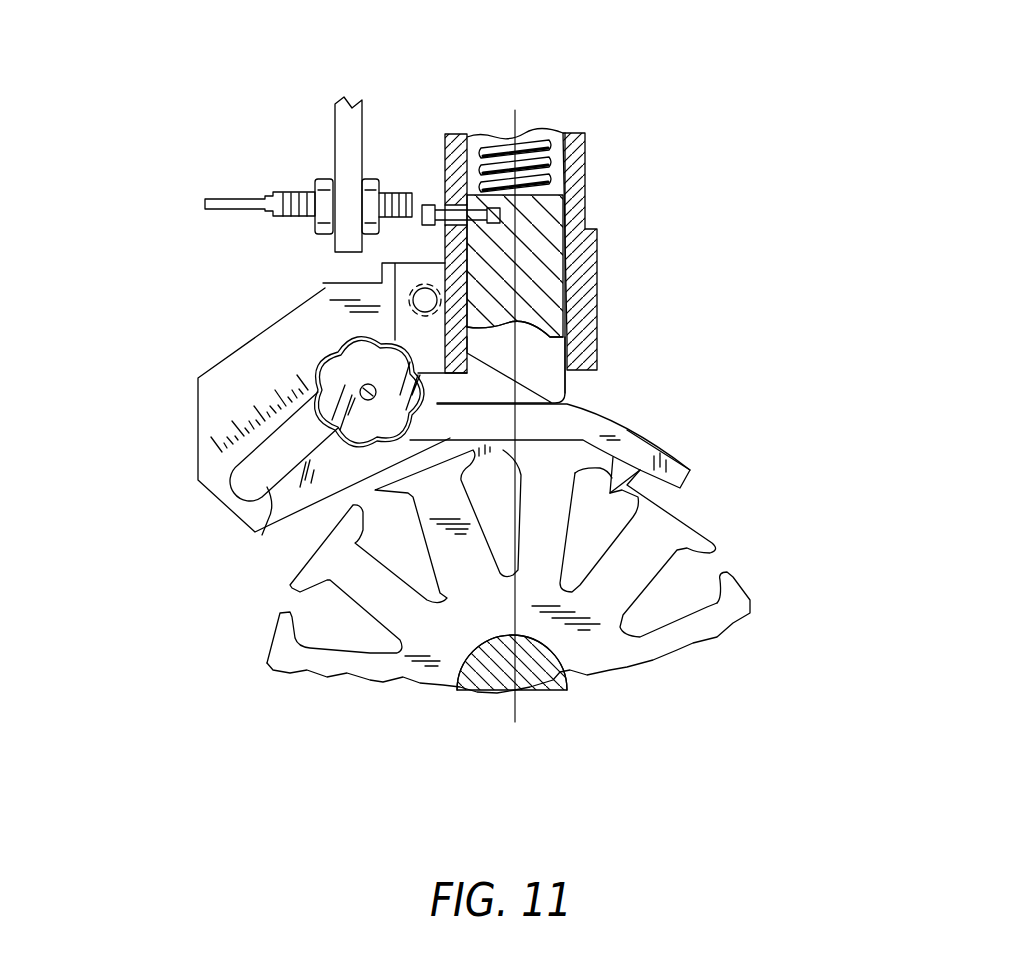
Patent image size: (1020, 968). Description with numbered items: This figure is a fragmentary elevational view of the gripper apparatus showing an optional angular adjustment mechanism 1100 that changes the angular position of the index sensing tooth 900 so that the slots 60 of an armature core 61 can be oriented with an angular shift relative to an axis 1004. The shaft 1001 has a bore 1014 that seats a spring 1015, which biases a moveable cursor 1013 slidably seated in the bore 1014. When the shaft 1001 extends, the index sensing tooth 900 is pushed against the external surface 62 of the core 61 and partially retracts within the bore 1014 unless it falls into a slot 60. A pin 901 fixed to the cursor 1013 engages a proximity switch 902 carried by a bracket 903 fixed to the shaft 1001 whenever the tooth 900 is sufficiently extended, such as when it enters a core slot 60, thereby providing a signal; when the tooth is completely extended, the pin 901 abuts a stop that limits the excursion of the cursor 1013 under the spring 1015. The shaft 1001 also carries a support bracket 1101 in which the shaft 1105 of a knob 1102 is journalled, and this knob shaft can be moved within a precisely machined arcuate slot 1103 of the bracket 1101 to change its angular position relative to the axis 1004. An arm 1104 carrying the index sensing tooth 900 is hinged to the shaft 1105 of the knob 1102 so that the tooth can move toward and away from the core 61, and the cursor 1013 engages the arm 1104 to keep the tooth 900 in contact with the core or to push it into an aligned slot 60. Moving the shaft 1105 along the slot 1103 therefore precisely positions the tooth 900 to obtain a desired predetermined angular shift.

The slot 60 is at (710, 567).
The armature core 61 is at (703, 623).
The external surface 62 is at (700, 523).
The index sensing tooth 900 is at (607, 500).
The pin 901 is at (427, 205).
The proximity switch 902 is at (297, 190).
The bracket 903 is at (350, 122).
The shaft 1001 is at (577, 174).
The axis 1004 is at (518, 118).
The cursor 1013 is at (566, 388).
The bore 1014 is at (478, 132).
The spring 1015 is at (558, 130).
The mechanism 1100 is at (665, 299).
The support bracket 1101 is at (216, 381).
The knob 1102 is at (333, 330).
The arcuate slot 1103 is at (273, 530).
The arm 1104 is at (624, 437).
The shaft of knob 1105 is at (365, 388).